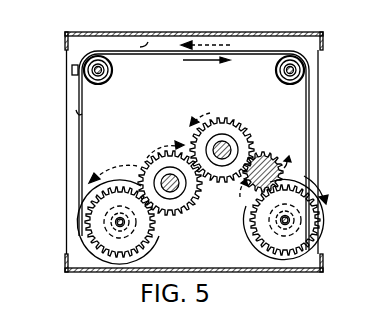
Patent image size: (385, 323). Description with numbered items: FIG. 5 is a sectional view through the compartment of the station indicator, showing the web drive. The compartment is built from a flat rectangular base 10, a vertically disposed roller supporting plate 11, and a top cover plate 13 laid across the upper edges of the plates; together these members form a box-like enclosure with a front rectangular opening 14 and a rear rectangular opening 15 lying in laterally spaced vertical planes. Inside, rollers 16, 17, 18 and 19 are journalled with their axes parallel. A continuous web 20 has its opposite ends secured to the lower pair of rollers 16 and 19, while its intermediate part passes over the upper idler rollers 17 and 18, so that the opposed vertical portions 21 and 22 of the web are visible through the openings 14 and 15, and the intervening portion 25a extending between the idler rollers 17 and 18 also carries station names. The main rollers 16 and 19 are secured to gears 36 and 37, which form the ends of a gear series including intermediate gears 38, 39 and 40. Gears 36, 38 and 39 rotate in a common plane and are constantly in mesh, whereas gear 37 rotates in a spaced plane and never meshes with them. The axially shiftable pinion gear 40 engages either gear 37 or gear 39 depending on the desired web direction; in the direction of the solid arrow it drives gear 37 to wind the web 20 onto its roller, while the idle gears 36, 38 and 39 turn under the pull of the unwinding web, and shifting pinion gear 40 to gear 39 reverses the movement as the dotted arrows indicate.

The base 10 is at (72, 272).
The roller supporting plate 11 is at (313, 70).
The top cover plate 13 is at (191, 20).
The front rectangular opening 14 is at (68, 159).
The rear rectangular opening 15 is at (322, 140).
The roller 16 is at (120, 220).
The idler roller 17 is at (98, 70).
The idler roller 18 is at (288, 70).
The roller 19 is at (287, 219).
The continuous web 20 is at (273, 50).
The vertical portion of the web 21 is at (84, 128).
The vertical portion of the web 22 is at (307, 122).
The intervening portion of the web 25a is at (210, 55).
The gear 36 is at (107, 250).
The gear 37 is at (280, 248).
The intermediate gear 38 is at (175, 213).
The intermediate gear 39 is at (226, 118).
The pinion gear 40 is at (264, 152).